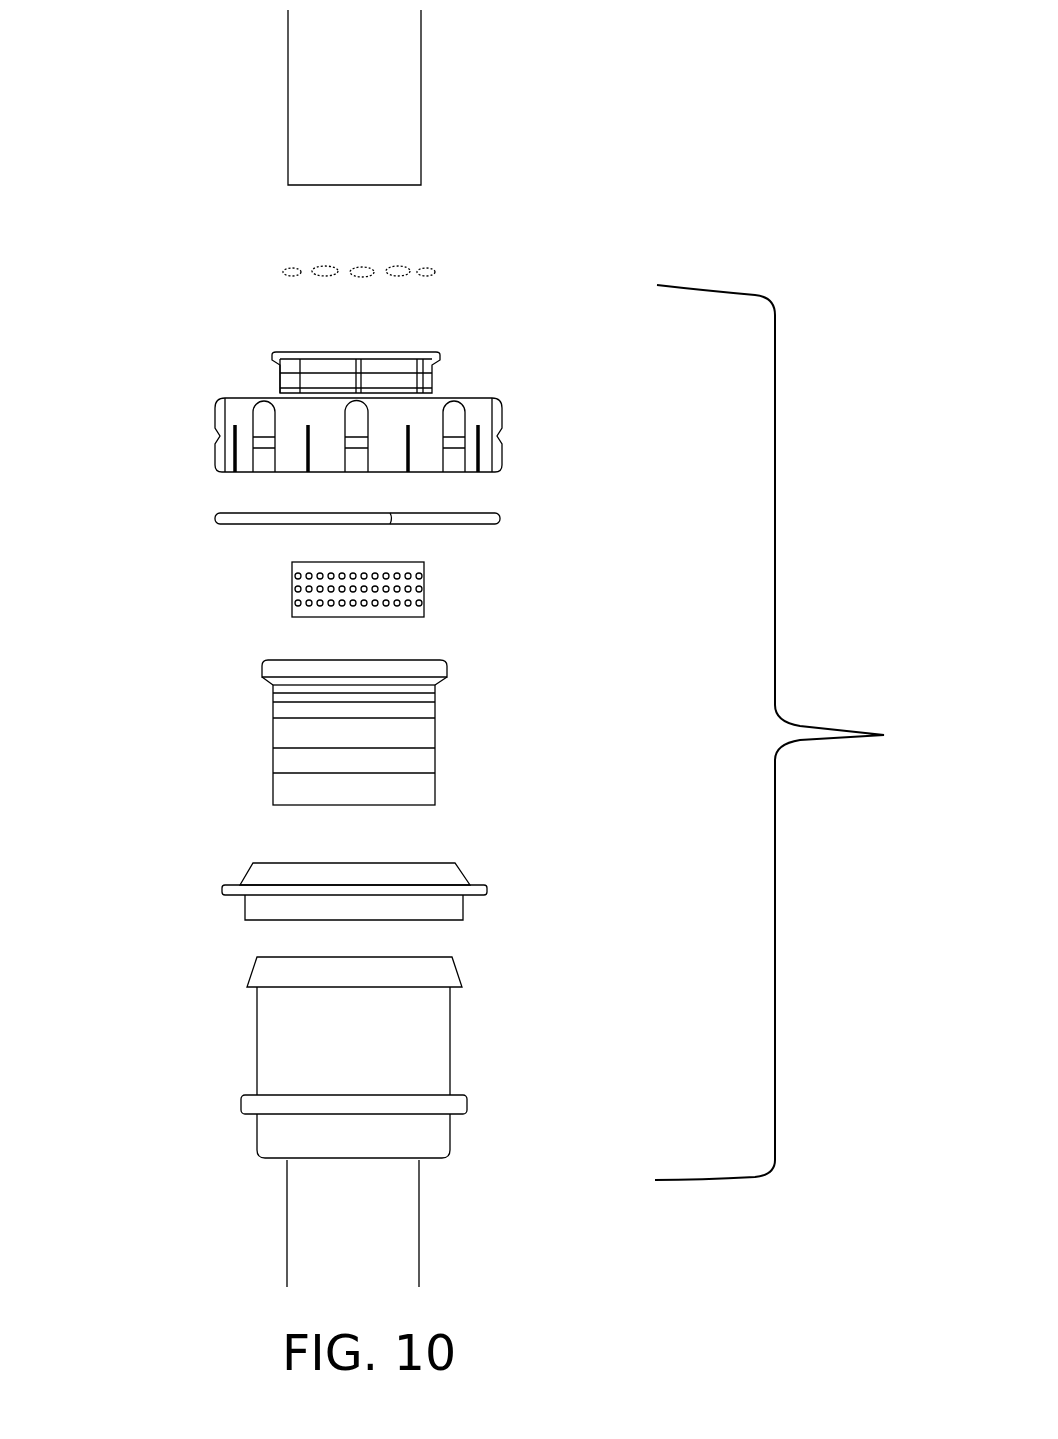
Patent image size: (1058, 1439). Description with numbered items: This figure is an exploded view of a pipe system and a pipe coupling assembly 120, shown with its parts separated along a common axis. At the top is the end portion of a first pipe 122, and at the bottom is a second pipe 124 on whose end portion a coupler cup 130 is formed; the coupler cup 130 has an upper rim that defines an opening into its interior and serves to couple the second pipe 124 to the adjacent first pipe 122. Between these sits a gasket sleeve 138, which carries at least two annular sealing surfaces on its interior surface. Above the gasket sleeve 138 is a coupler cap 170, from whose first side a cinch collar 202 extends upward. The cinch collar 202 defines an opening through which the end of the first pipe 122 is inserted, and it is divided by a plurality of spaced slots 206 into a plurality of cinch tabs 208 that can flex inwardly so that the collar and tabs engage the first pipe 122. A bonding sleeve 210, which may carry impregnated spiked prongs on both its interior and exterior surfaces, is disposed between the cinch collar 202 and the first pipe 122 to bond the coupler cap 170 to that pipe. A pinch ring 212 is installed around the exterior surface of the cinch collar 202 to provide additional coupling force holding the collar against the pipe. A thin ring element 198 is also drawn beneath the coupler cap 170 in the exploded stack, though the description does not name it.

The coupling assembly 120 is at (578, 732).
The first pipe 122 is at (421, 70).
The second pipe 124 is at (286, 1197).
The coupler cup 130 is at (442, 1146).
The gasket sleeve 138 is at (272, 735).
The coupler cap 170 is at (222, 402).
The seal ring 198 is at (218, 515).
The cinch collar 202 is at (408, 323).
The slots 206 is at (418, 353).
The cinch tabs 208 is at (395, 353).
The bonding sleeve 210 is at (292, 590).
The pinch ring 212 is at (435, 270).